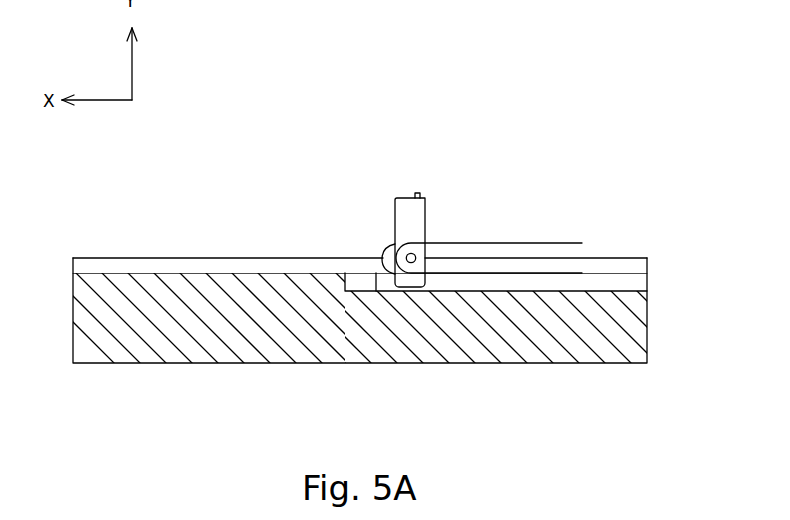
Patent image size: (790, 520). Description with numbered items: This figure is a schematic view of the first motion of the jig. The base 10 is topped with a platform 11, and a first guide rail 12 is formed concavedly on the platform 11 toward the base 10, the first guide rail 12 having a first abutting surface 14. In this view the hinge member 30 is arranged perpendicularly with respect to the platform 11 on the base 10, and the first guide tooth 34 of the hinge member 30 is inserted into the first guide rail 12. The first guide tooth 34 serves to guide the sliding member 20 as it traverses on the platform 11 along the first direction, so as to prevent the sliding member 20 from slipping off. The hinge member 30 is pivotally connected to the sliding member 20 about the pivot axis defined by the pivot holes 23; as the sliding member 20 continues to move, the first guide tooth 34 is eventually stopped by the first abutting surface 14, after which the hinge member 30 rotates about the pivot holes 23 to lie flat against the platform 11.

The base 10 is at (257, 340).
The platform 11 is at (217, 273).
The first guide rail 12 is at (612, 282).
The first abutting surface 14 is at (350, 278).
The sliding member 20 is at (518, 253).
The pivot holes 23 is at (412, 258).
The hinge member 30 is at (403, 218).
The first guide tooth 34 is at (410, 280).